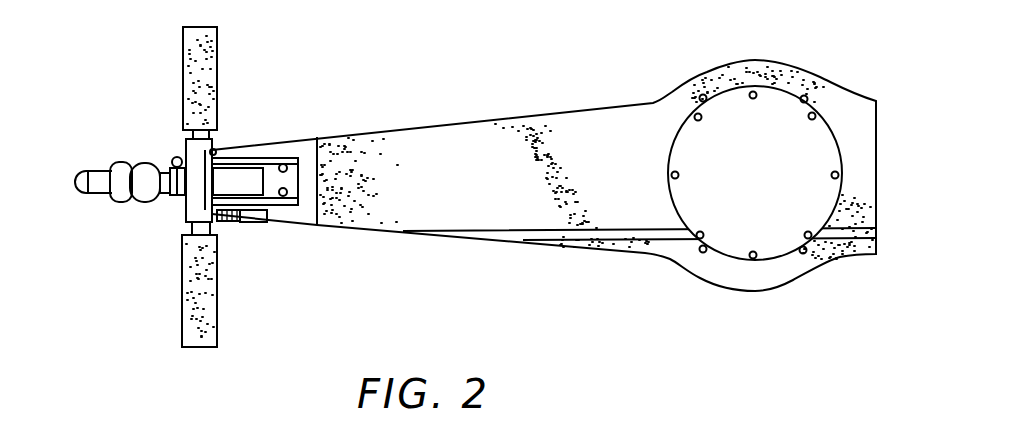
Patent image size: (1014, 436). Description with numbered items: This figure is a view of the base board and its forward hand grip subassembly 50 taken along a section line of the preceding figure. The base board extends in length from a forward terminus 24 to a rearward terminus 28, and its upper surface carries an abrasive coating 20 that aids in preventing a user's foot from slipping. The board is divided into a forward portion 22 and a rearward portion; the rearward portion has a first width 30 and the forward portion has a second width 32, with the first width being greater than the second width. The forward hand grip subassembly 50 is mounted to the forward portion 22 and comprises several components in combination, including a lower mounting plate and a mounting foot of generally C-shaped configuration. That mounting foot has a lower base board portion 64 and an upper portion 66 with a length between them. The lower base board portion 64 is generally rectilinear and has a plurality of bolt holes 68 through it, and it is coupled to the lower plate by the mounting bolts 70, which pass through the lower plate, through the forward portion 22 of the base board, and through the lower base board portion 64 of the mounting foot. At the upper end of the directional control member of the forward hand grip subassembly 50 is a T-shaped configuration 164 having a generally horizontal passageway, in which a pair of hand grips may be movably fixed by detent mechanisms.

The abrasive coating 20 is at (480, 168).
The forward portion 22 is at (317, 138).
The forward terminus 24 is at (219, 139).
The rearward terminus 28 is at (877, 135).
The first width 30 is at (740, 58).
The second width 32 is at (257, 139).
The forward hand grip subassembly 50 is at (153, 218).
The lower base board portion 64 is at (272, 185).
The upper portion 66 is at (250, 220).
The bolt holes 68 is at (283, 165).
The mounting bolts 70 is at (286, 195).
The T-shaped configuration 164 is at (184, 147).